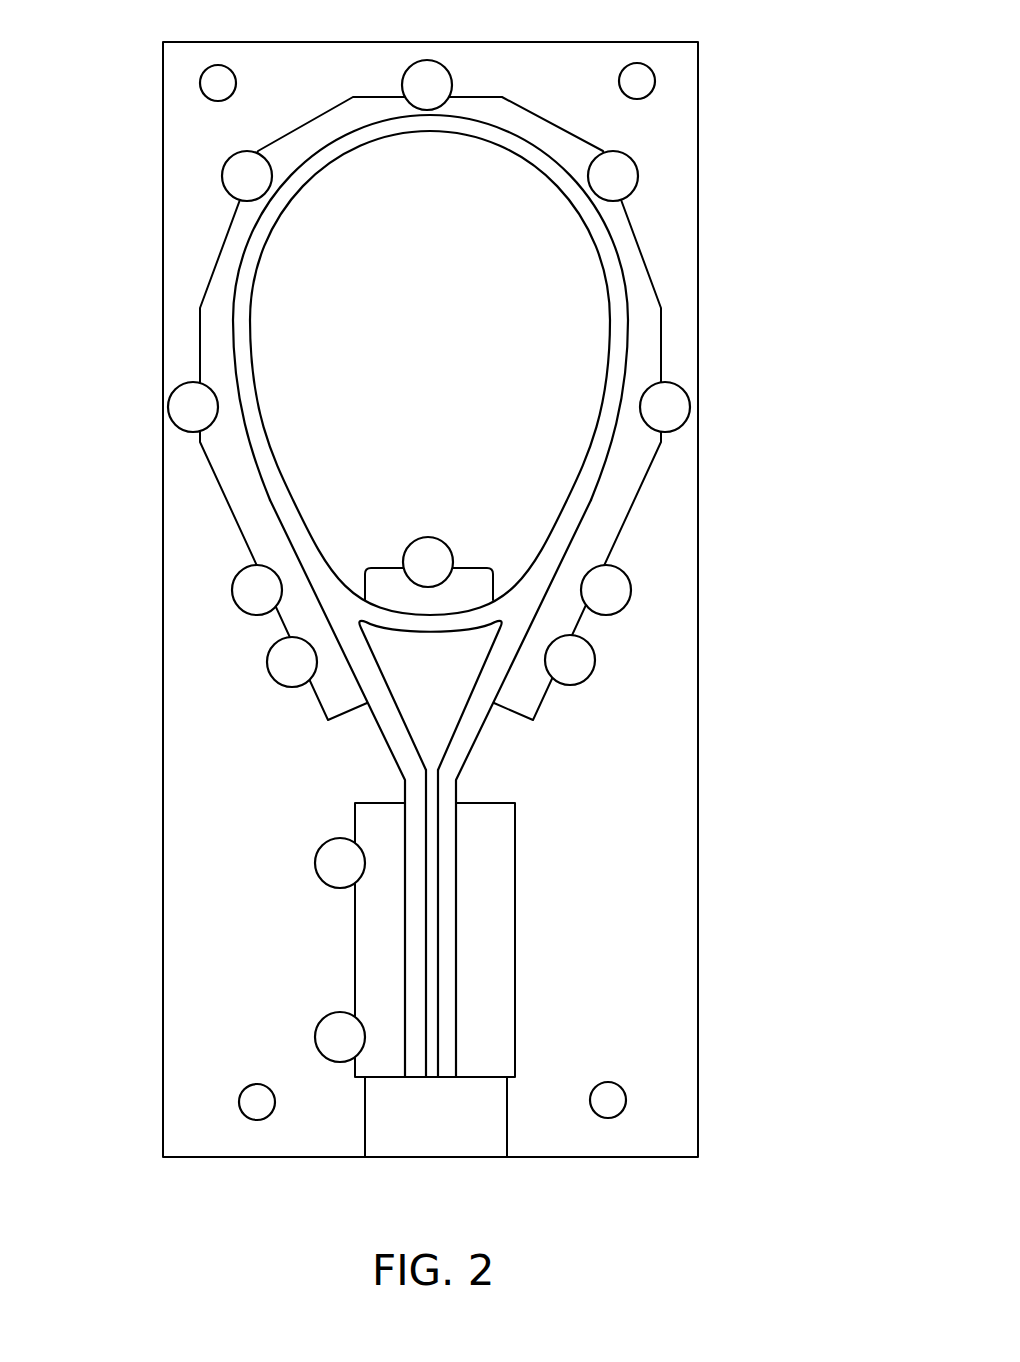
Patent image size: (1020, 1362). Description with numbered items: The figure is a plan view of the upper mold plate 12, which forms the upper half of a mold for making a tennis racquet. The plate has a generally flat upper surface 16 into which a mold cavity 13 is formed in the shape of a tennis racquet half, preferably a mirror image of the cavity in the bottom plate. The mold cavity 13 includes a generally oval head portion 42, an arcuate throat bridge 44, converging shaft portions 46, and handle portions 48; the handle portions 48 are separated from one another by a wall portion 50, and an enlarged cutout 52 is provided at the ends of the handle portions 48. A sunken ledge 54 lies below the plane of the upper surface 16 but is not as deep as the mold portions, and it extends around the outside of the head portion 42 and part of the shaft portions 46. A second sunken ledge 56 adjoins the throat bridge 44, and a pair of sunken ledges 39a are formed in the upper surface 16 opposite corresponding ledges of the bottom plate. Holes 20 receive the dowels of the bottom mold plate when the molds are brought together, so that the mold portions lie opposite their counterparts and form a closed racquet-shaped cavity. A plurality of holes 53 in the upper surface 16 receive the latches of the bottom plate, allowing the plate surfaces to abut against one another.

The upper mold plate 12 is at (700, 837).
The mold cavity 13 is at (250, 407).
The upper surface 16 is at (601, 900).
The holes 20 is at (212, 83).
The sunken ledges 39a is at (483, 975).
The head portion 42 is at (418, 128).
The throat bridge 44 is at (440, 625).
The shaft portions 46 is at (470, 737).
The handle portions 48 is at (448, 892).
The wall portion 50 is at (434, 836).
The enlarged cutout 52 is at (483, 1143).
The holes 53 is at (430, 72).
The sunken ledge 54 is at (215, 462).
The second sunken ledge 56 is at (385, 578).